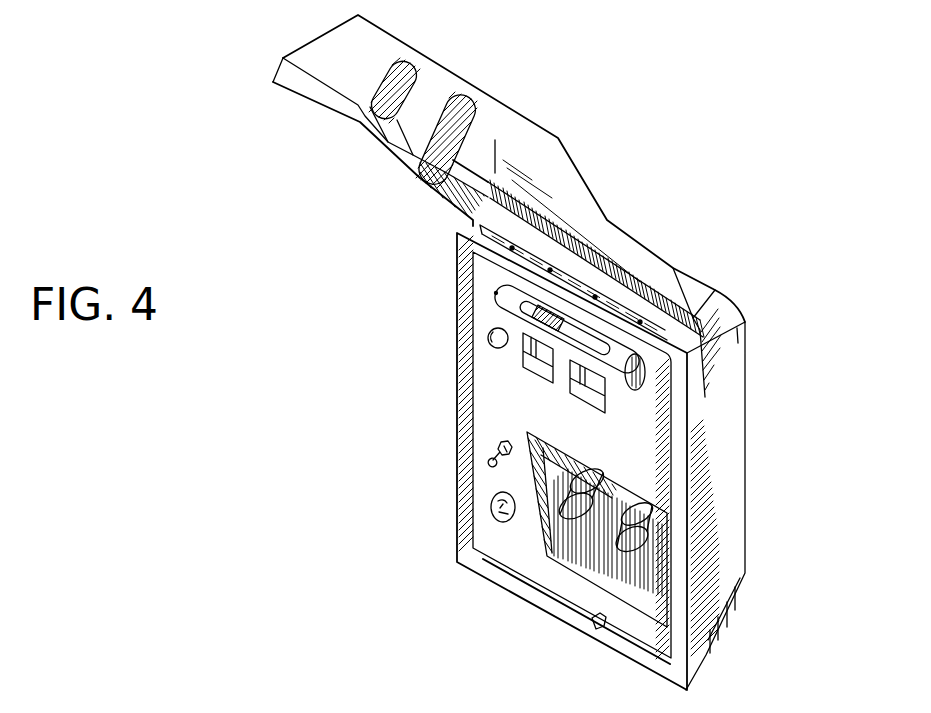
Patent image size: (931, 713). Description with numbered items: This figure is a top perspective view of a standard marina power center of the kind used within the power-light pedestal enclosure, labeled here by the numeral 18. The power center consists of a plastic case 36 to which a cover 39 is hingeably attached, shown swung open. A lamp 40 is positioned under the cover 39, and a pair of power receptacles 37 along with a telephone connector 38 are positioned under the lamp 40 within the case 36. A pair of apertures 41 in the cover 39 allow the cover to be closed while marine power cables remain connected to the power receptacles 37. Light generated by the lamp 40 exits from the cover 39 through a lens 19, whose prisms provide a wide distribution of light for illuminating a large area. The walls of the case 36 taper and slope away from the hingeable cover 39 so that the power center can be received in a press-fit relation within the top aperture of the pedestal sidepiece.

The power distribution unit 18 is at (704, 175).
The lens 19 is at (455, 247).
The plastic case 36 is at (746, 418).
The power receptacle 37 is at (620, 547).
The telephone connector 38 is at (491, 511).
The cover 39 is at (387, 30).
The lamp 40 is at (510, 315).
The aperture 41 is at (360, 122).